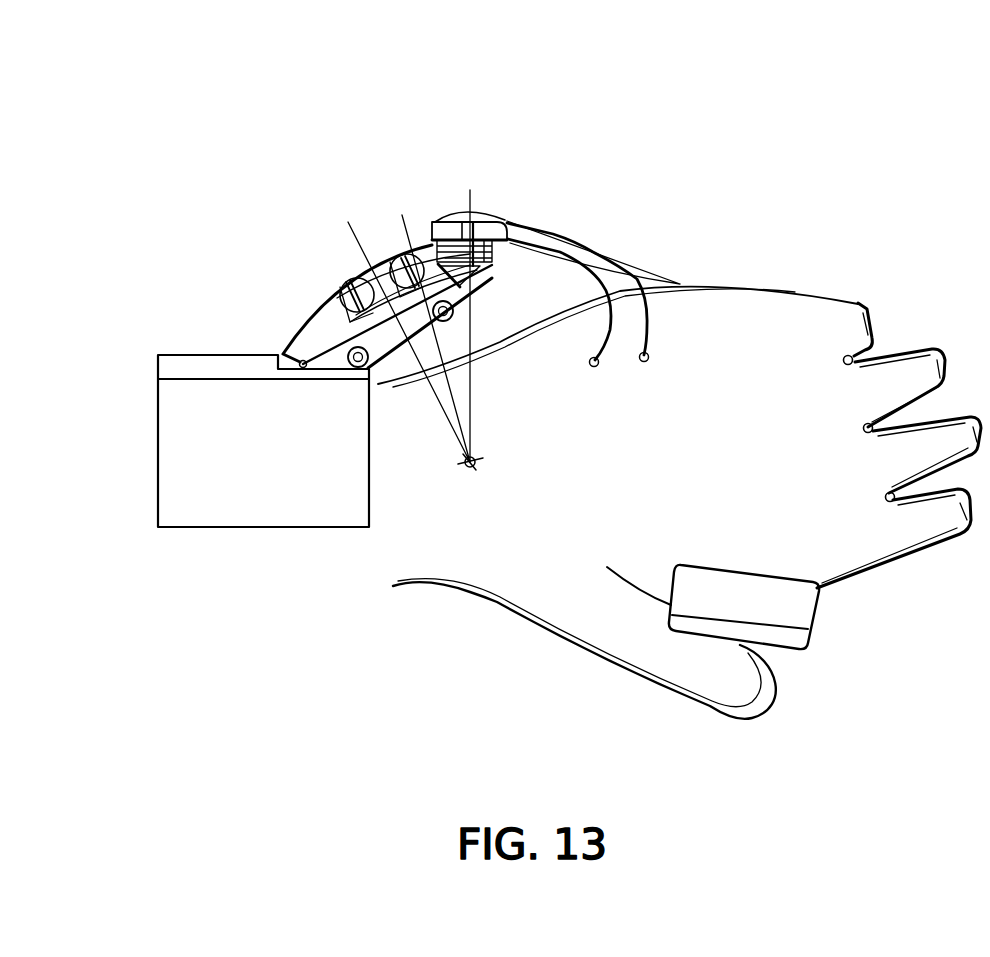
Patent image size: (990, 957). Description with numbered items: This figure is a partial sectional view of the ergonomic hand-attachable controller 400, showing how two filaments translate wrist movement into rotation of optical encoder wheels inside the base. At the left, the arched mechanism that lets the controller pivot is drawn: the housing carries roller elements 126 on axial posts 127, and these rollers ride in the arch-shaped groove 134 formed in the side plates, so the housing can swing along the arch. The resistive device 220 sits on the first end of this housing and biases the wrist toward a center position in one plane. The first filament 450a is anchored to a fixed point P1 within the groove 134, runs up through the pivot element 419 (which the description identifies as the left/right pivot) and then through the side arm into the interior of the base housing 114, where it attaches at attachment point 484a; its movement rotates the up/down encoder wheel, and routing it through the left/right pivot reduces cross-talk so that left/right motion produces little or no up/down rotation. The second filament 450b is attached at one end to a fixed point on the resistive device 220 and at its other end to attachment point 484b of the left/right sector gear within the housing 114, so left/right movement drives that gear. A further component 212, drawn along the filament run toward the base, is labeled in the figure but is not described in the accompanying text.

The controller 400 is at (772, 208).
The cap block 419 is at (446, 221).
The resistive device 220 is at (408, 250).
The roller elements 126 is at (390, 258).
The axial posts 127 is at (337, 292).
The arch-shaped groove 134 is at (313, 330).
The fixed point P1 is at (300, 362).
The cable sheath 212 is at (633, 270).
The first housing 114 is at (794, 316).
The filament 450a is at (650, 313).
The filament 450b is at (590, 330).
The attachment point 484a is at (645, 362).
The attachment point 484b is at (593, 367).